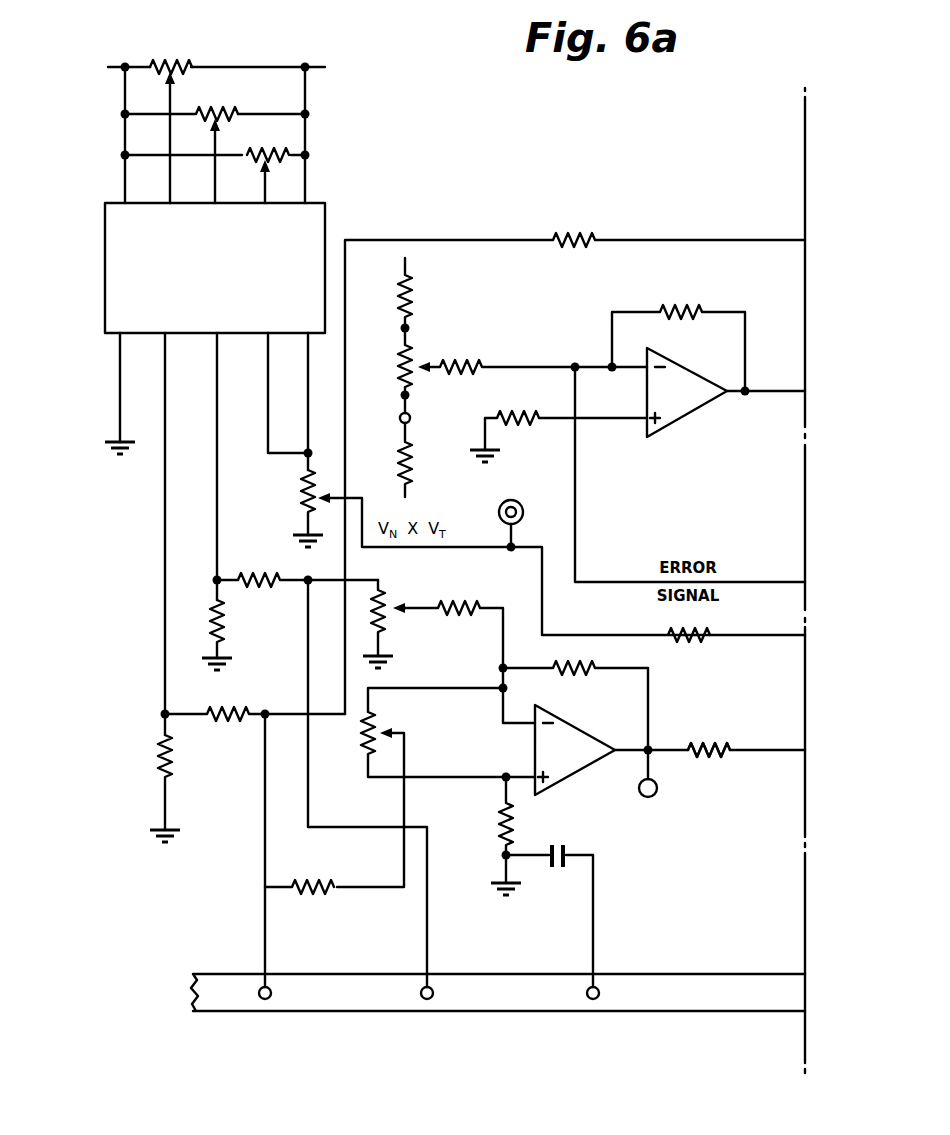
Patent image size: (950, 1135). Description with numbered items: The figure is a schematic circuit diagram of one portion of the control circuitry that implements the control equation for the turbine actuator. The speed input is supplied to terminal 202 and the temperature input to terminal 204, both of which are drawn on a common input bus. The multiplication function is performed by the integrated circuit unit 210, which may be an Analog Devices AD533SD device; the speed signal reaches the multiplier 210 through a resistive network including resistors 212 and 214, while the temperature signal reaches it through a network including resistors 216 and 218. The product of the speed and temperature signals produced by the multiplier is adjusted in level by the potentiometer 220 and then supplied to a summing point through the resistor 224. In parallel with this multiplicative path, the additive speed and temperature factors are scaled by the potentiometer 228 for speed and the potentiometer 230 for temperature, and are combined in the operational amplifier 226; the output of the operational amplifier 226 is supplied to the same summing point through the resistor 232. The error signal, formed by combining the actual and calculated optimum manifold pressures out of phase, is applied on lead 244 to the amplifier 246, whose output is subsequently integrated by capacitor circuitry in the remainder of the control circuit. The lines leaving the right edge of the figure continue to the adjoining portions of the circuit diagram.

The terminal 202 is at (262, 1001).
The terminal 204 is at (434, 994).
The integrated circuit unit 210 is at (326, 218).
The resistor 212 is at (228, 726).
The resistor 214 is at (160, 765).
The resistor 216 is at (255, 578).
The resistor 218 is at (213, 618).
The potentiometer 220 is at (300, 494).
The resistor 224 is at (695, 646).
The operational amplifier 226 is at (570, 758).
The potentiometer 228 is at (375, 719).
The potentiometer 230 is at (385, 620).
The resistor 232 is at (712, 761).
The lead 244 is at (577, 479).
The amplifier 246 is at (695, 411).